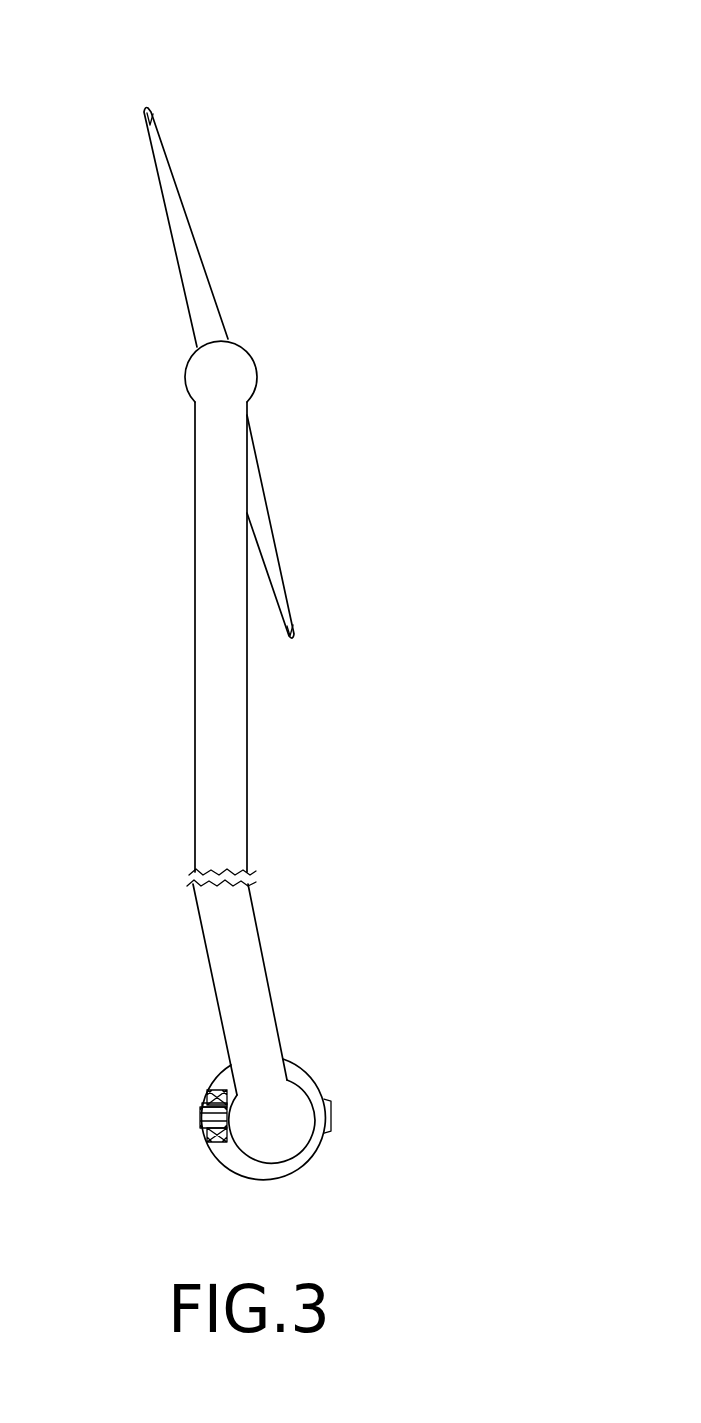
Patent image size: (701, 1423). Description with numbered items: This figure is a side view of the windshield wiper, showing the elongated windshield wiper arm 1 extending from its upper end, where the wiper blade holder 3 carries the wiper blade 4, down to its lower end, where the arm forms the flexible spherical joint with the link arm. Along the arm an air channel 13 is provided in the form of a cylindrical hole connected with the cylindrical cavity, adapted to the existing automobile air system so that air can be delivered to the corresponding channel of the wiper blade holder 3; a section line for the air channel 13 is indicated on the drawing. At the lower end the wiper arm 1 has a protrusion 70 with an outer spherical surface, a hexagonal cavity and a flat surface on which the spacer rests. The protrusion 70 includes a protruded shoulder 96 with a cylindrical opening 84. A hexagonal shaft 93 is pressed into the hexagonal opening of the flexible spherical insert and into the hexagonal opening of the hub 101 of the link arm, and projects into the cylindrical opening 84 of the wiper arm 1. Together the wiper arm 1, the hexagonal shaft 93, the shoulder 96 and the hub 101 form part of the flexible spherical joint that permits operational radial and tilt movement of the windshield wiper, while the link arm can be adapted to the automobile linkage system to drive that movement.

The windshield wiper arm 1 is at (195, 537).
The wiper blade holder 3 is at (168, 232).
The wiper blade 4 is at (190, 25).
The air channel 13 is at (230, 1133).
The protrusion 70 is at (303, 1130).
The cylindrical opening 84 is at (205, 1135).
The hexagonal shaft 93 is at (203, 1113).
The protruded shoulder 96 is at (207, 1092).
The hub 101 is at (207, 1102).